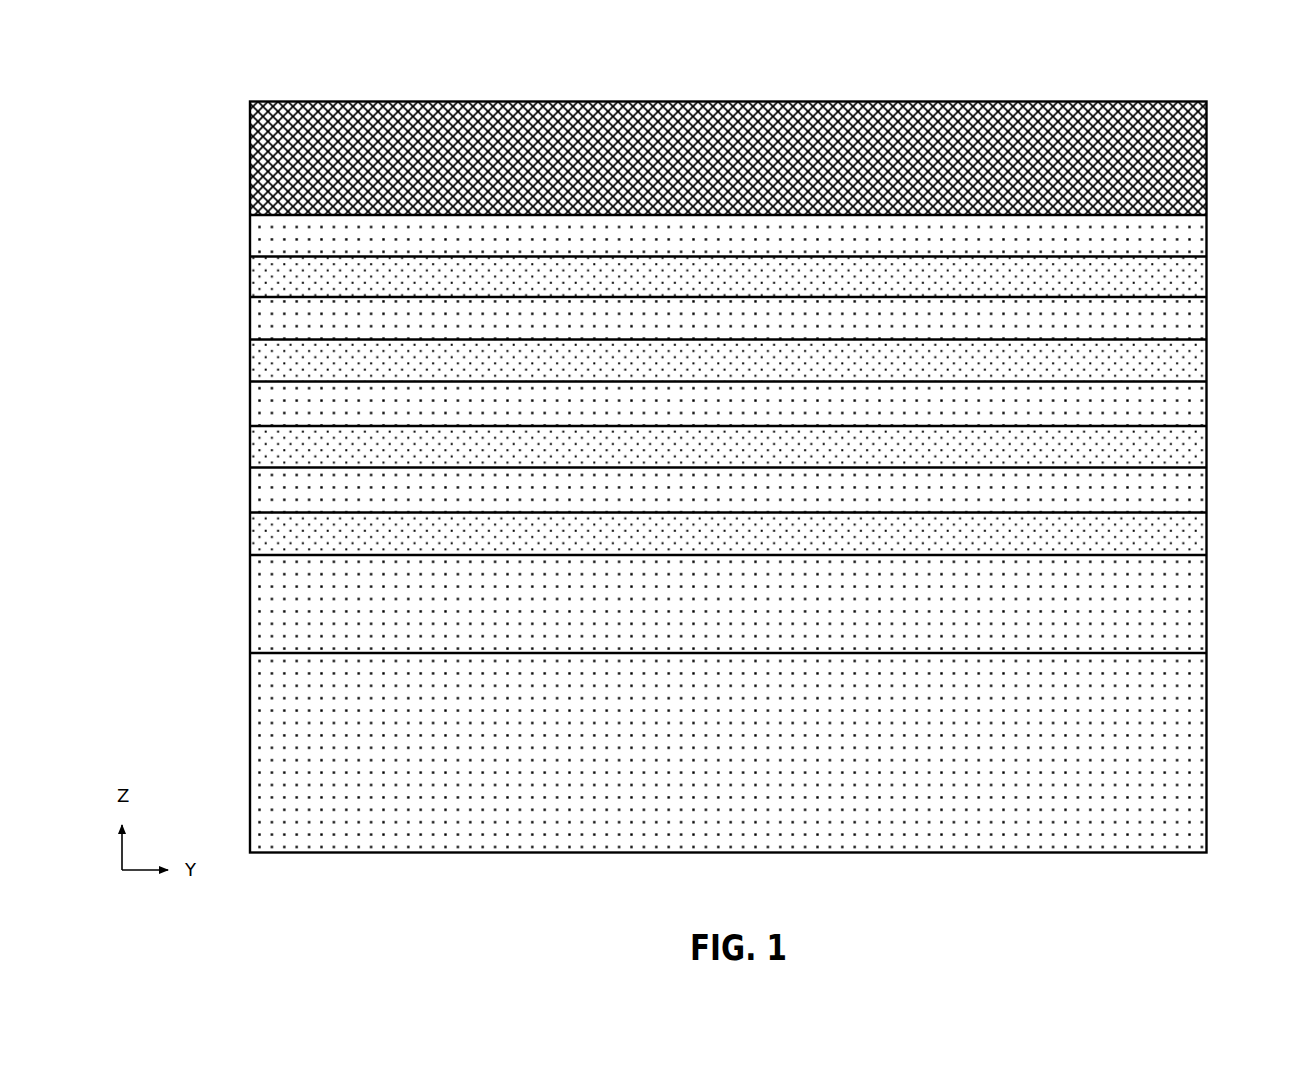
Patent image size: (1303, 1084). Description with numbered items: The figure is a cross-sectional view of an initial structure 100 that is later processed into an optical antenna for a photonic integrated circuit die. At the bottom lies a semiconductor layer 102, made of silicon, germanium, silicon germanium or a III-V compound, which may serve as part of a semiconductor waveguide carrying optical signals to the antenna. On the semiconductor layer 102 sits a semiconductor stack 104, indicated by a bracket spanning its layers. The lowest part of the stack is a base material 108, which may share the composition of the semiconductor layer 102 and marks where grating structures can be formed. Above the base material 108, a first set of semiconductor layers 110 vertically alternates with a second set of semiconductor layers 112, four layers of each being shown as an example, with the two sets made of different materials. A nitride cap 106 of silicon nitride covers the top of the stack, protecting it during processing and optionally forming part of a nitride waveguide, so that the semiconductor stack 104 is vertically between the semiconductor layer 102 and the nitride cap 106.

The initial structure 100 is at (727, 448).
The semiconductor layer 102 is at (268, 748).
The semiconductor stack 104 is at (720, 420).
The nitride cap 106 is at (258, 155).
The base material 108 is at (1186, 625).
The first set of semiconductor layers 110 is at (1190, 282).
The second set of semiconductor layers 112 is at (1197, 228).